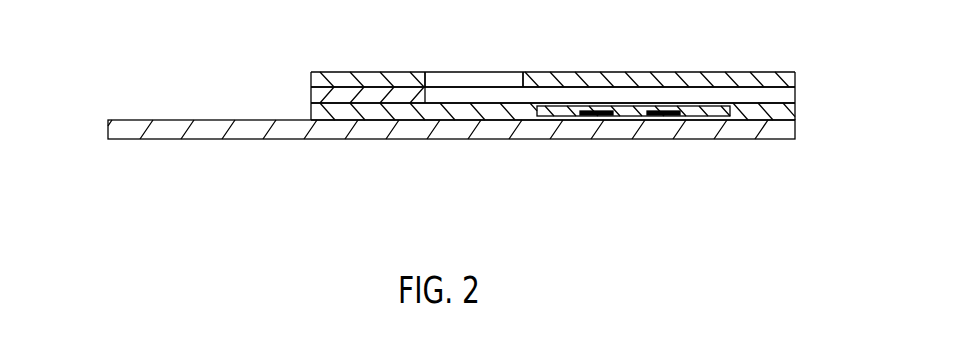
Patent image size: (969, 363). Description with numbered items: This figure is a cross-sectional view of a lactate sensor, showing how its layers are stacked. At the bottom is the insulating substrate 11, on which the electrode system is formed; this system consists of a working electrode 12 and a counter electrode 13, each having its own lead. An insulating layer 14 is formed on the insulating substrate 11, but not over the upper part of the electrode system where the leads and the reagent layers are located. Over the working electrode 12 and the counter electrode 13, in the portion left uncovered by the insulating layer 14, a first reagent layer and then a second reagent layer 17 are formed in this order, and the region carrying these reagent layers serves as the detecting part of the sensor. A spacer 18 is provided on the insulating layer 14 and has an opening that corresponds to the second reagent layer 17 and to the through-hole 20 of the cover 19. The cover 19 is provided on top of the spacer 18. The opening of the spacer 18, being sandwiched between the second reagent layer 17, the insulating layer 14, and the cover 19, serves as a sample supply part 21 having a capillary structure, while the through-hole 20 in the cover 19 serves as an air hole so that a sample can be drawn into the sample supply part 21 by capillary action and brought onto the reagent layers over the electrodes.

The insulating substrate 11 is at (127, 131).
The working electrode 12 is at (603, 118).
The counter electrode 13 is at (668, 117).
The insulating layer 14 is at (325, 112).
The second reagent layer 17 is at (549, 117).
The spacer 18 is at (326, 95).
The cover 19 is at (367, 76).
The through-hole 20 is at (474, 74).
The sample supply part 21 is at (765, 96).